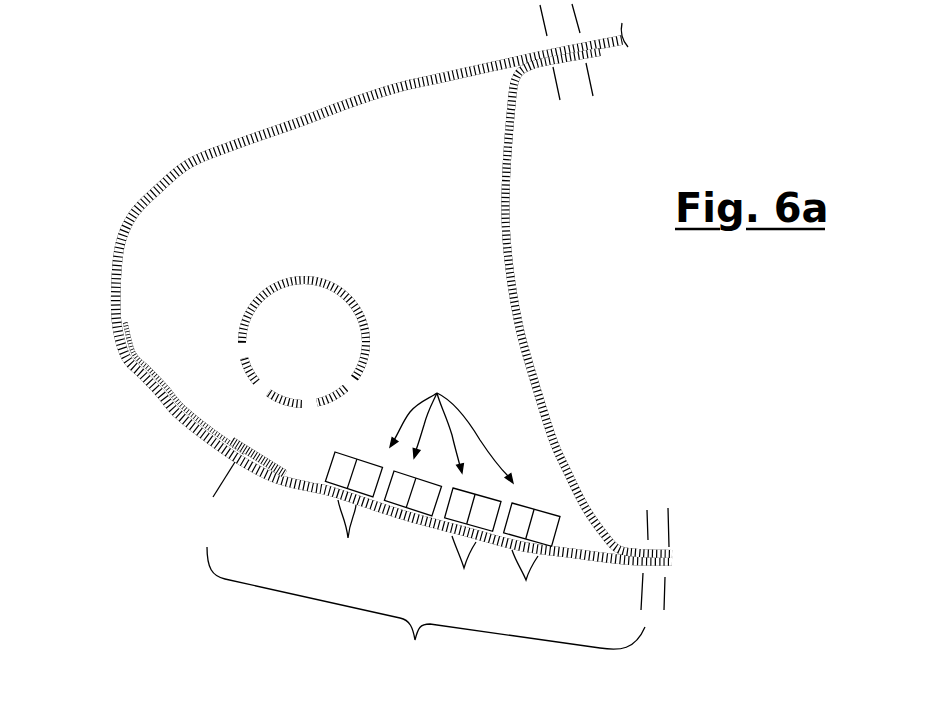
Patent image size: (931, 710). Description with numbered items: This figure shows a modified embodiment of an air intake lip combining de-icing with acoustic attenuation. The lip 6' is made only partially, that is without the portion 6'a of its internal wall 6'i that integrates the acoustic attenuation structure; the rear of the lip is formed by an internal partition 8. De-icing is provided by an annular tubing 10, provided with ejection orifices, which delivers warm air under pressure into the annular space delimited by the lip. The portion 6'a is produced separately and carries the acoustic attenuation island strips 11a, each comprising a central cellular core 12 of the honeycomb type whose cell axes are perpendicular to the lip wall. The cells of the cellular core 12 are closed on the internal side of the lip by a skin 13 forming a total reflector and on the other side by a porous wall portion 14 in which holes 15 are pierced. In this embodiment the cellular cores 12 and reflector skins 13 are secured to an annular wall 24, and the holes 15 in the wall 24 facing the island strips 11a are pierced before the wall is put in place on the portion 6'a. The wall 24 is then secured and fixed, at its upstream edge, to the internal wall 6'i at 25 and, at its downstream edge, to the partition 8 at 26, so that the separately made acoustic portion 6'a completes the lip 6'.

The lip 6' is at (394, 282).
The internal wall of the lip 6'i is at (174, 388).
The portion of the internal wall 6'a is at (426, 612).
The internal partition 8 is at (528, 334).
The annular tubing 10 is at (268, 278).
The island strip 11a is at (451, 424).
The cellular core 12 is at (340, 463).
The skin 13 is at (355, 456).
The porous wall portion 14 is at (343, 534).
The holes 15 is at (464, 568).
The wall 24 is at (309, 492).
The upstream fixing 25 is at (219, 471).
The downstream fixing 26 is at (655, 592).